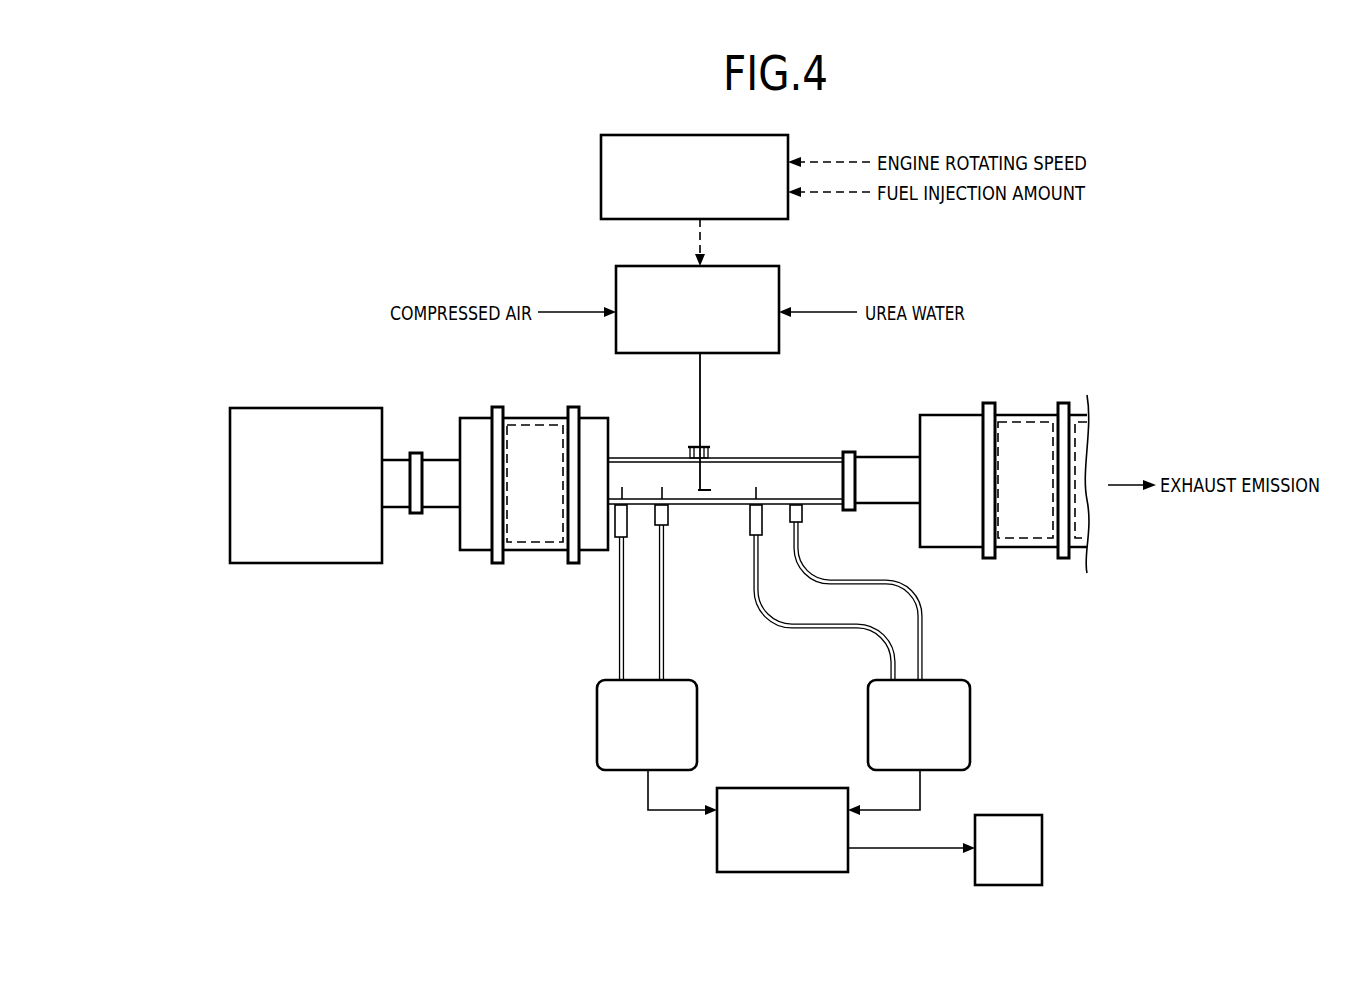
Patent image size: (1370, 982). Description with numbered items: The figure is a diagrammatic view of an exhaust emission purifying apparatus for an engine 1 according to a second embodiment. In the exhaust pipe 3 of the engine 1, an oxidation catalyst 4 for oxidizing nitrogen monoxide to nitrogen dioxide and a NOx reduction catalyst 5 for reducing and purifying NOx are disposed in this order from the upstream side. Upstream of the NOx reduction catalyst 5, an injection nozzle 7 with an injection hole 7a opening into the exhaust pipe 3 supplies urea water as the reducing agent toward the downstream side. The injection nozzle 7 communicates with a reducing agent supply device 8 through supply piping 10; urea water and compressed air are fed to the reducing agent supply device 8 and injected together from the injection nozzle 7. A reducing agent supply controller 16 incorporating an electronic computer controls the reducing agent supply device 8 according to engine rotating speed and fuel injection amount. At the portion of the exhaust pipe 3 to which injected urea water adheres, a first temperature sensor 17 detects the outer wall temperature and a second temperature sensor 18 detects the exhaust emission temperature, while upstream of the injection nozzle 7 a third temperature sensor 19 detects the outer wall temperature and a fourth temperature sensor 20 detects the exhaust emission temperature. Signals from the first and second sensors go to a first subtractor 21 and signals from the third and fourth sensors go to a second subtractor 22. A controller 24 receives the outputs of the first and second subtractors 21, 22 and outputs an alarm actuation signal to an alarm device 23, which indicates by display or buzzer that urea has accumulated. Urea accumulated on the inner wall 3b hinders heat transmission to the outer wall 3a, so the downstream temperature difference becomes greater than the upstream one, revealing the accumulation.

The engine 1 is at (302, 564).
The exhaust pipe 3 is at (651, 513).
The outer wall 3a is at (732, 505).
The inner wall 3b is at (722, 500).
The oxidation catalyst 4 is at (543, 543).
The NOx reduction catalyst 5 is at (1037, 539).
The injection nozzle 7 is at (704, 504).
The injection hole 7a is at (701, 492).
The reducing agent supply device 8 is at (778, 265).
The supply piping 10 is at (702, 402).
The reducing agent supply controller 16 is at (601, 153).
The first temperature sensor 17 is at (793, 524).
The second temperature sensor 18 is at (752, 537).
The third temperature sensor 19 is at (657, 525).
The fourth temperature sensor 20 is at (615, 539).
The first subtractor 21 is at (971, 720).
The second subtractor 22 is at (698, 720).
The alarm device 23 is at (1026, 813).
The controller 24 is at (800, 786).